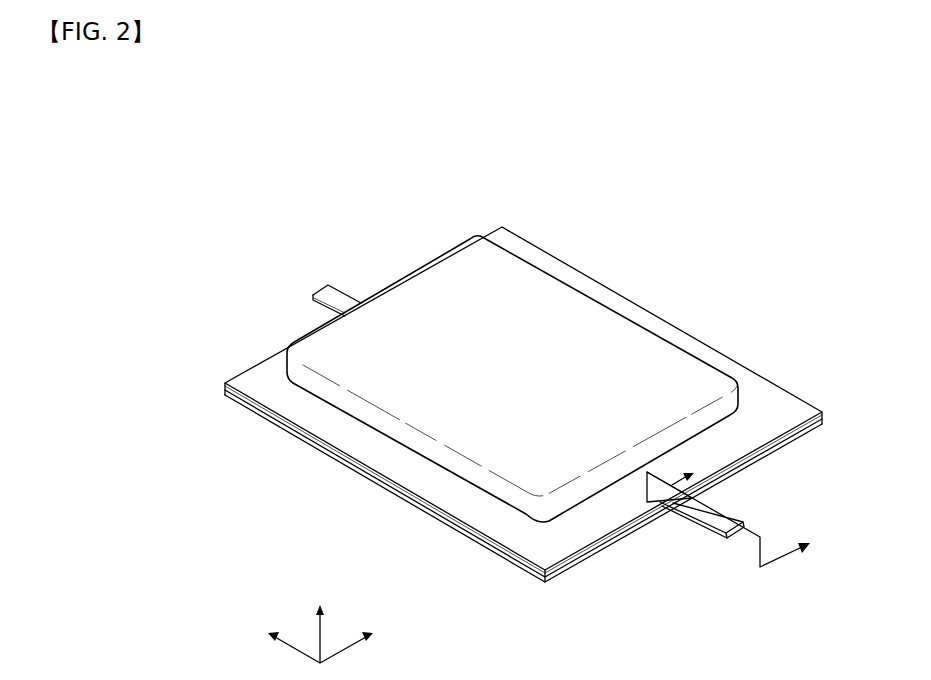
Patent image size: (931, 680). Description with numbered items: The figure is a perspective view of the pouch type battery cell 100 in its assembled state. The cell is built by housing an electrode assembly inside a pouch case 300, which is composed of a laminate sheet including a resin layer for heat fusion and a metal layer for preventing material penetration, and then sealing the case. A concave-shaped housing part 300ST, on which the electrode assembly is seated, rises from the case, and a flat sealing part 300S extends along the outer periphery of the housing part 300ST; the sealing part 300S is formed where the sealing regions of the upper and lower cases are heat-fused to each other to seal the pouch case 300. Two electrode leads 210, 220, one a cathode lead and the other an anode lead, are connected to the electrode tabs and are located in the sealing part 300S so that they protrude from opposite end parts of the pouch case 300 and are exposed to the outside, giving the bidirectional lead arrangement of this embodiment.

The pouch type battery cell 100 is at (456, 160).
The electrode lead 210 is at (700, 512).
The electrode lead 220 is at (343, 298).
The pouch case 300 is at (670, 310).
The sealing part 300S is at (338, 430).
The housing part 300ST is at (562, 312).